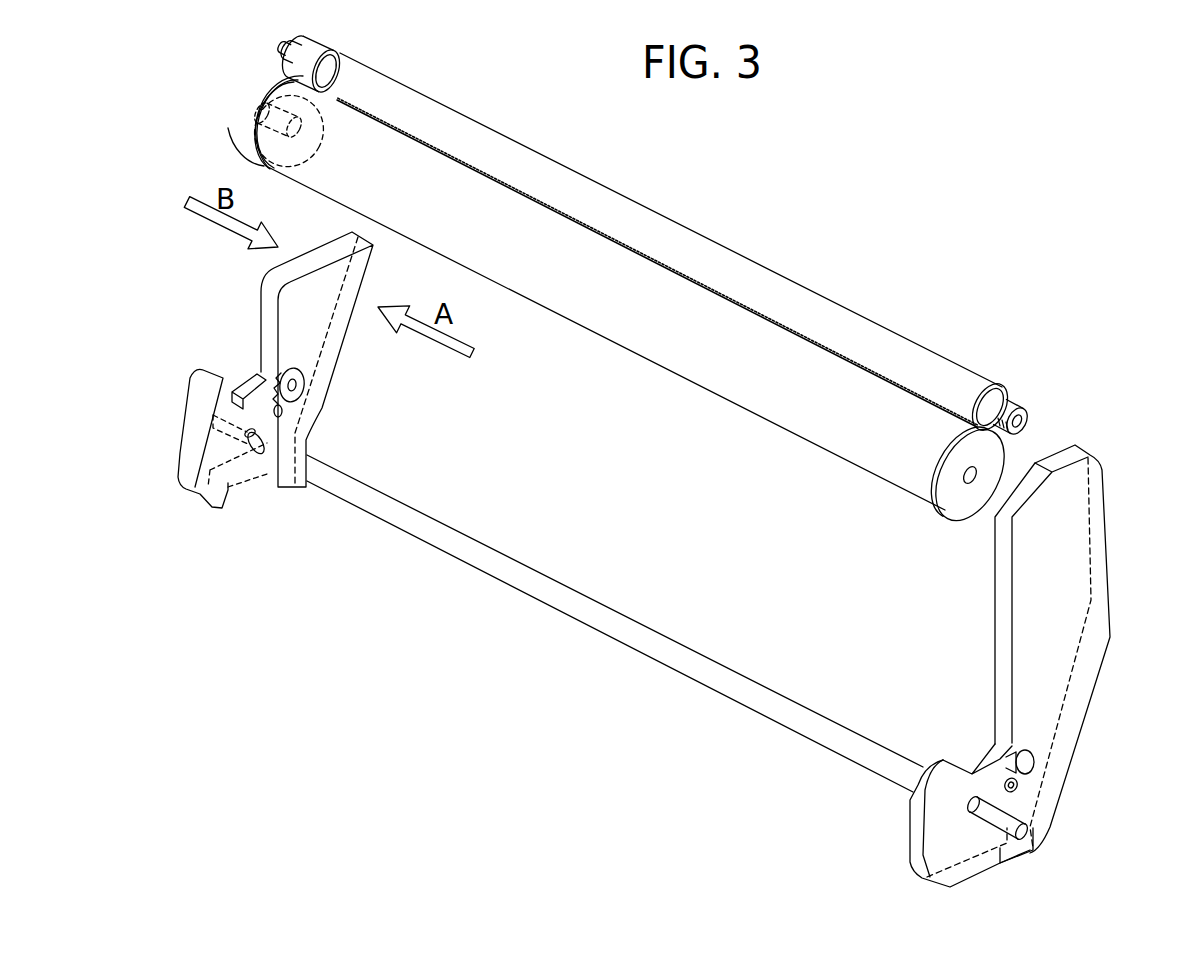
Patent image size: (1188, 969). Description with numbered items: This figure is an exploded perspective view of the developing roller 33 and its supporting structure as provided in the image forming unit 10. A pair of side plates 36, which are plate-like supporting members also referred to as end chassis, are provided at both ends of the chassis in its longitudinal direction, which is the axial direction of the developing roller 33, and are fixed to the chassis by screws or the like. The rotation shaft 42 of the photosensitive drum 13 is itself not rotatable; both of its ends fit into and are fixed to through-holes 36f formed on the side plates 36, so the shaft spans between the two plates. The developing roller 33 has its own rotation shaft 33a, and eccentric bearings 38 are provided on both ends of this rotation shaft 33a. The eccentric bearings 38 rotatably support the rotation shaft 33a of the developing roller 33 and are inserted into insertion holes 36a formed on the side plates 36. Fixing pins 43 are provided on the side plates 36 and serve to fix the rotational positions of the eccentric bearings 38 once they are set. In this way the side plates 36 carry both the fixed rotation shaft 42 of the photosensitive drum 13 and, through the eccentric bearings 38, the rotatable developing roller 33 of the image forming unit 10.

The image forming unit 10 is at (870, 256).
The photosensitive drum 13 is at (597, 335).
The developing roller 33 is at (588, 163).
The rotation shaft 33a is at (980, 395).
The side plates 36 is at (320, 412).
The insertion holes 36a is at (262, 375).
The through-holes 36f is at (214, 426).
The eccentric bearings 38 is at (1012, 400).
The rotation shaft 42 is at (497, 575).
The fixing pins 43 is at (280, 440).